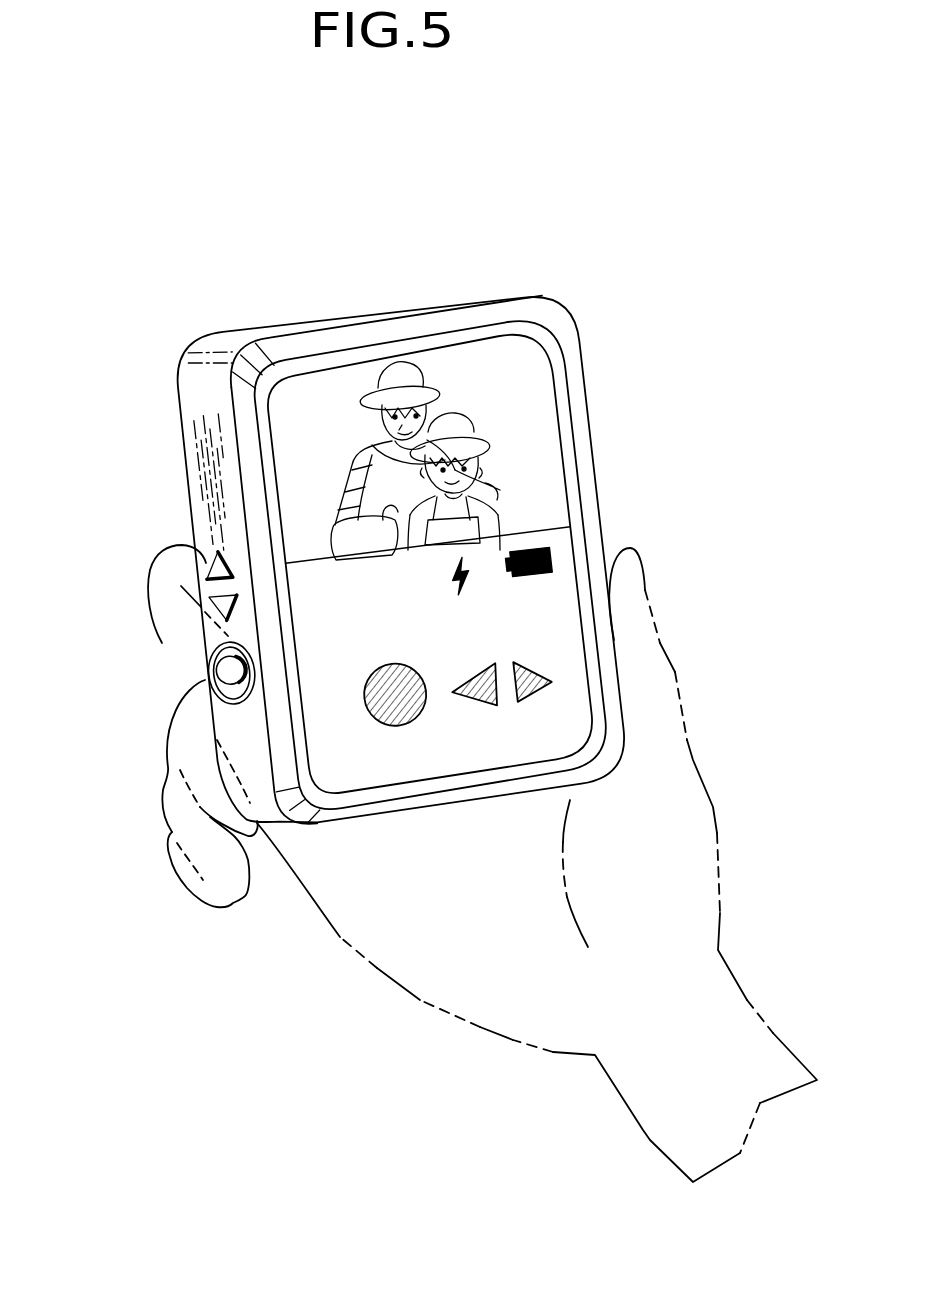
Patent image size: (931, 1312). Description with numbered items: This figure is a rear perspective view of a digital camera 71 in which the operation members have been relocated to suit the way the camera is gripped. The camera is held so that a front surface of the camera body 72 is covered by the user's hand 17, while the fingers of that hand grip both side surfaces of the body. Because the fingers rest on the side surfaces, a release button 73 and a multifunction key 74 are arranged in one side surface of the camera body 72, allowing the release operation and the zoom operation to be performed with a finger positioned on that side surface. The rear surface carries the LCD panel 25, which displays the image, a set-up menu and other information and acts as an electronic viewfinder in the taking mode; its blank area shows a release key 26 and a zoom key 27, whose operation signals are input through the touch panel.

The hand 17 is at (643, 1130).
The LCD panel 25 is at (512, 372).
The release key 26 is at (400, 702).
The zoom key 27 is at (537, 697).
The digital camera 71 is at (349, 256).
The camera body 72 is at (265, 318).
The release button 73 is at (228, 673).
The multifunction key 74 is at (205, 608).